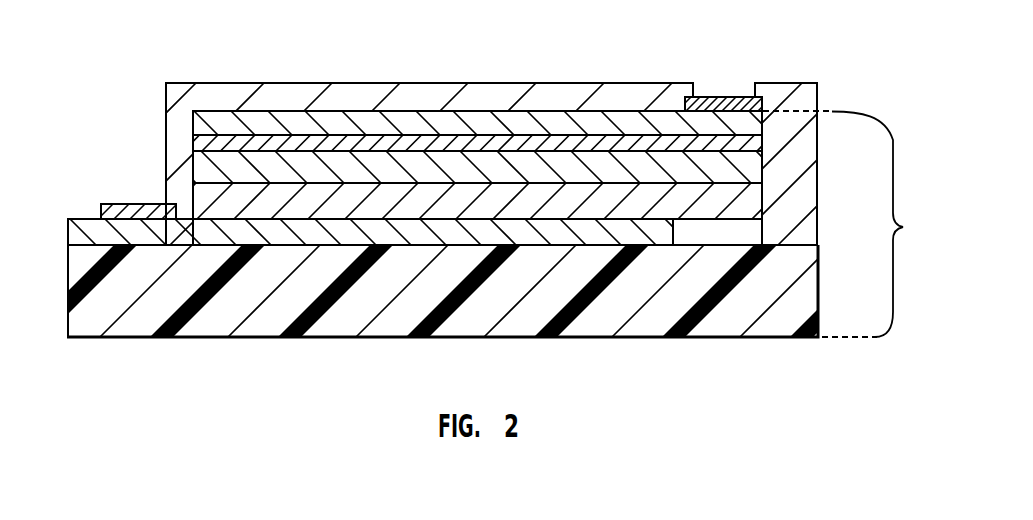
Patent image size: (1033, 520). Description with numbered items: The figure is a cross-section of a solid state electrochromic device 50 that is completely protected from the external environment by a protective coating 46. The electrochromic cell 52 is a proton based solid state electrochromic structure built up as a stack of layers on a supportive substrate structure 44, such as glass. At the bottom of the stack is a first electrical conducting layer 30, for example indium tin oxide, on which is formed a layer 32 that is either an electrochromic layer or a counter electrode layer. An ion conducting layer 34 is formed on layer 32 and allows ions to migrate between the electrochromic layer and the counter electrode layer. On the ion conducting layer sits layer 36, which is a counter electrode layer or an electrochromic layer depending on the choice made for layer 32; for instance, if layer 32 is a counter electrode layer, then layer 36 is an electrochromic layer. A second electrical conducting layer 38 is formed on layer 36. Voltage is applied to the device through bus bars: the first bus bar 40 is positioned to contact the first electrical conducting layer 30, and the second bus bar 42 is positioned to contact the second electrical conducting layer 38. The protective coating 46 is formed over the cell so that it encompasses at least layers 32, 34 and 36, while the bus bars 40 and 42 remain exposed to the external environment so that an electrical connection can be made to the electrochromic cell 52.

The first electrical conducting layer 30 is at (93, 224).
The electrochromic layer or counter electrode layer 32 is at (738, 214).
The ion conducting layer 34 is at (752, 172).
The counter electrode layer or electrochromic layer 36 is at (750, 143).
The second electrical conducting layer 38 is at (745, 122).
The first bus bar 40 is at (134, 203).
The second bus bar 42 is at (723, 97).
The supportive substrate structure 44 is at (234, 310).
The protective coating 46 is at (370, 86).
The electrochromic device 50 is at (129, 113).
The electrochromic cell 52 is at (844, 224).